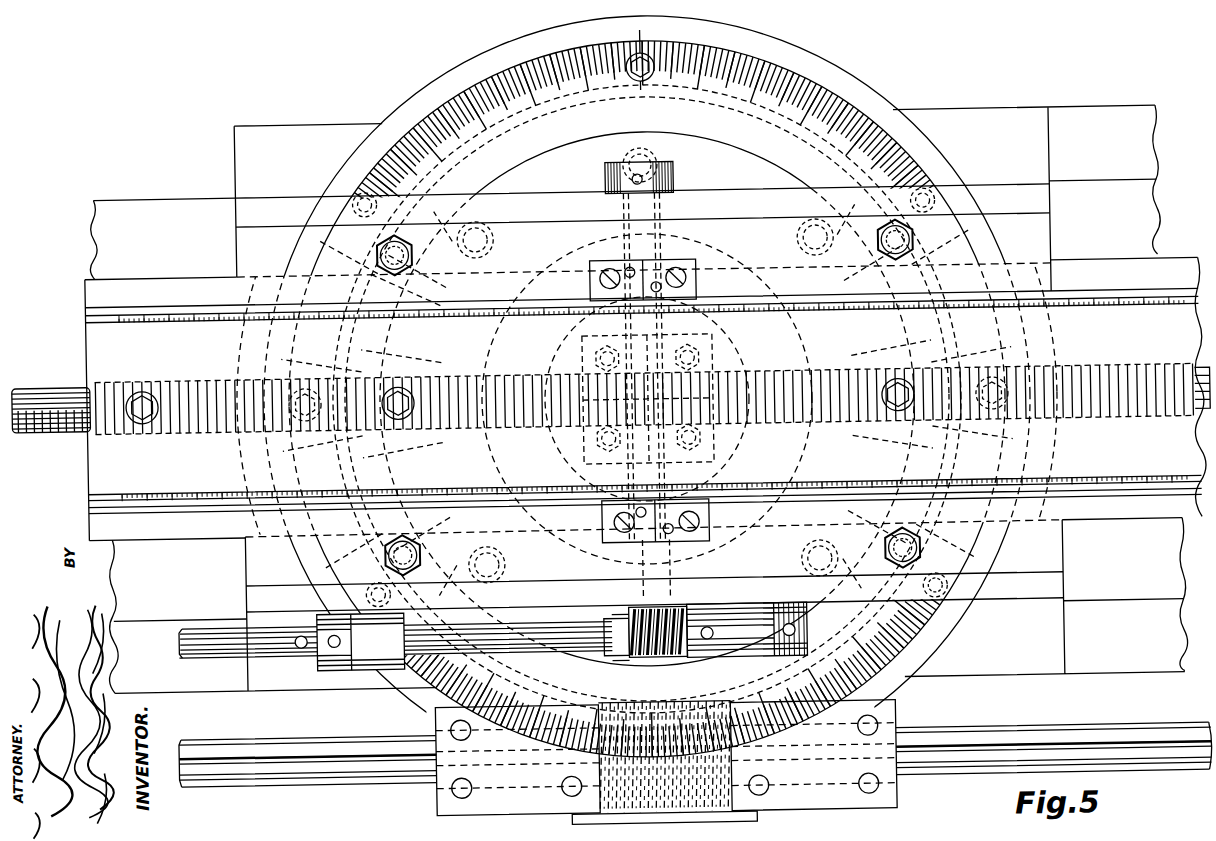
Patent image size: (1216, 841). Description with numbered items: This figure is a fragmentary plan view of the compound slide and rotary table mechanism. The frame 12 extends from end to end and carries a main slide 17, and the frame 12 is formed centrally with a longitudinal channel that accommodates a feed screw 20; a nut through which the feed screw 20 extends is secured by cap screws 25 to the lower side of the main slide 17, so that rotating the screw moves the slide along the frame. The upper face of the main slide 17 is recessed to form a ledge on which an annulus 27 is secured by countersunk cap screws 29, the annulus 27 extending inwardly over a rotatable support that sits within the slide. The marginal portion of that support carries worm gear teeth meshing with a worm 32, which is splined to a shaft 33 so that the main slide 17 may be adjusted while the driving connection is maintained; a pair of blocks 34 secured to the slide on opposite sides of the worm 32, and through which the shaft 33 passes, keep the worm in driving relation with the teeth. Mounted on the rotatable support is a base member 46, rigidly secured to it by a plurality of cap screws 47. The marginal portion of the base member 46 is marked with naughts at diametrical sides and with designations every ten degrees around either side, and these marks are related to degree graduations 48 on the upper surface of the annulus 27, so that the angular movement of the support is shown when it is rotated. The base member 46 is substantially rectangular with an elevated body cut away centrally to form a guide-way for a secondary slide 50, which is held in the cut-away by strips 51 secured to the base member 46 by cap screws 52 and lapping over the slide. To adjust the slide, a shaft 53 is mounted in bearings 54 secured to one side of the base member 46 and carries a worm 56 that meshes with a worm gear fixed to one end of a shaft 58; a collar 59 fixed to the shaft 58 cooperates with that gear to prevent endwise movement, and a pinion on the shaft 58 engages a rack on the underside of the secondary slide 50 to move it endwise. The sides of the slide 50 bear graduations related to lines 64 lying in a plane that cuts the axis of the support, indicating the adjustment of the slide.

The frame 12 is at (97, 222).
The main slide 17 is at (1050, 645).
The feed screw 20 is at (48, 380).
The cap screws 25 is at (705, 346).
The annulus 27 is at (860, 130).
The countersunk cap screws 29 is at (660, 52).
The worm 32 is at (648, 822).
The shaft 33 is at (395, 778).
The blocks 34 is at (492, 812).
The base member 46 is at (282, 206).
The cap screws 47 is at (660, 160).
The degree graduations 48 is at (808, 90).
The secondary slide 50 is at (97, 334).
The strips 51 is at (1010, 218).
The cap screws 52 is at (412, 258).
The shaft 53 is at (553, 620).
The bearings 54 is at (362, 666).
The worm 56 is at (700, 612).
The shaft 58 is at (640, 590).
The collar 59 is at (678, 183).
The lines 64 is at (665, 270).